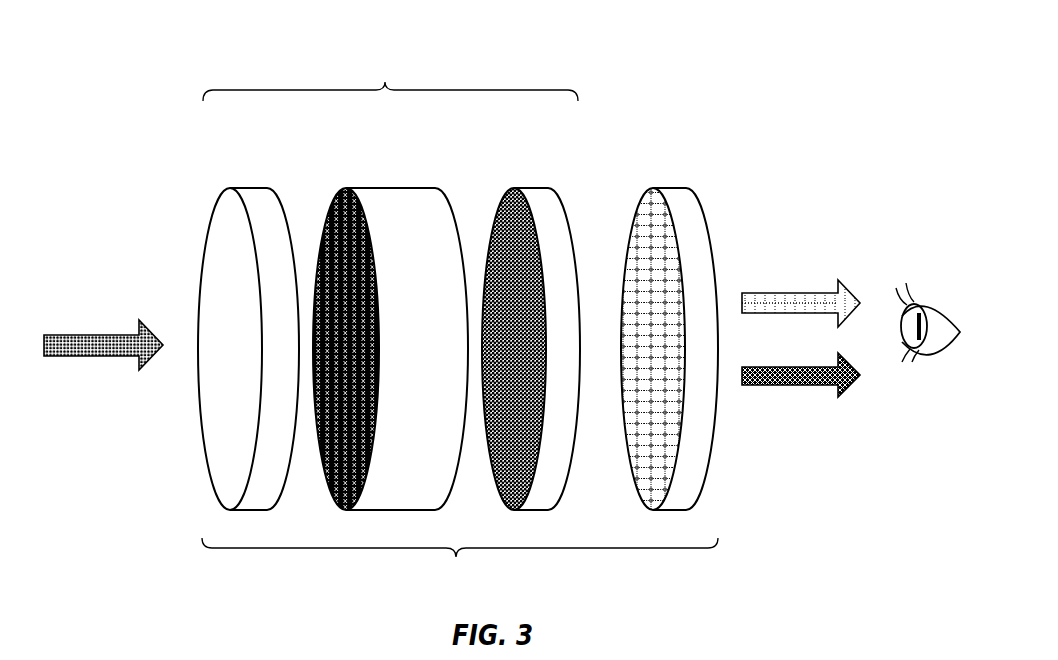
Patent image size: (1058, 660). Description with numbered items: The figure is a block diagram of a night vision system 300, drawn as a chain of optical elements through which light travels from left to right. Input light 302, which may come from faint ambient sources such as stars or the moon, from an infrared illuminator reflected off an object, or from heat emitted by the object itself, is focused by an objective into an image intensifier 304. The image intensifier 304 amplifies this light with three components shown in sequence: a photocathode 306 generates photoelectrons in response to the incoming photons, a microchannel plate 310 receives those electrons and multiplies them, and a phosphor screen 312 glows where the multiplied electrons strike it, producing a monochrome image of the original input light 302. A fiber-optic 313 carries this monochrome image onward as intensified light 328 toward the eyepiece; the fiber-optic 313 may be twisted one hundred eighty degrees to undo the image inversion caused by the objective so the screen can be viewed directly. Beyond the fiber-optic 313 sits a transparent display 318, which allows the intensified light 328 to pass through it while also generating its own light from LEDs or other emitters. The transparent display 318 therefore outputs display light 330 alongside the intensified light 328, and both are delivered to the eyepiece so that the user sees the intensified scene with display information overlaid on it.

The night vision system 300 is at (458, 321).
The input light 302 is at (91, 334).
The image intensifier 304 is at (389, 278).
The photocathode 306 is at (247, 188).
The microchannel plate 310 is at (437, 361).
The phosphor screen 312 is at (506, 194).
The fiber-optic 313 is at (512, 323).
The transparent display 318 is at (677, 188).
The intensified light 328 is at (784, 294).
The display light 330 is at (784, 367).